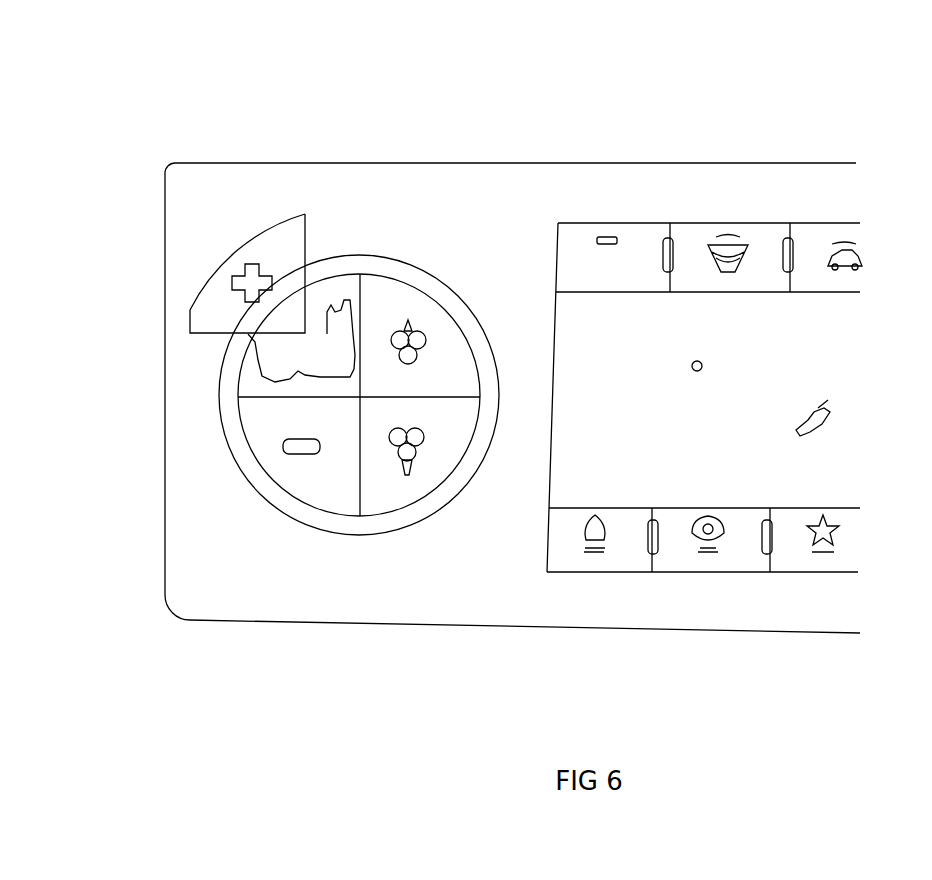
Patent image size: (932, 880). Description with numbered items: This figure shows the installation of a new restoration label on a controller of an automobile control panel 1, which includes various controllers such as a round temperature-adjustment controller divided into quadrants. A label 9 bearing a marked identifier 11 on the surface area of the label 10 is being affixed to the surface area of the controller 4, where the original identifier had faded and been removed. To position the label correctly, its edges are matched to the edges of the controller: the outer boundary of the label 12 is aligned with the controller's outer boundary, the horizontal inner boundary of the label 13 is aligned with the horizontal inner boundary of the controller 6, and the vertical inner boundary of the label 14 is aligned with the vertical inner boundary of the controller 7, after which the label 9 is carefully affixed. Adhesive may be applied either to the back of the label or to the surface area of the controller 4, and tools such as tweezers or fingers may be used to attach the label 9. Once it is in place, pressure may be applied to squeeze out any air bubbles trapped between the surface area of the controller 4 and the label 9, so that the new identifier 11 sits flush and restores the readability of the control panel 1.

The automobile control panel 1 is at (518, 237).
The surface area of the controller 4 is at (328, 330).
The horizontal inner boundary of the controller 6 is at (283, 398).
The vertical inner boundary of the controller 7 is at (360, 330).
The label 9 is at (268, 263).
The surface area of the label 10 is at (220, 282).
The marked identifier on the label 11 is at (258, 290).
The outer boundary of the label 12 is at (217, 255).
The horizontal inner boundary of the label 13 is at (212, 337).
The vertical inner boundary of the label 14 is at (303, 290).